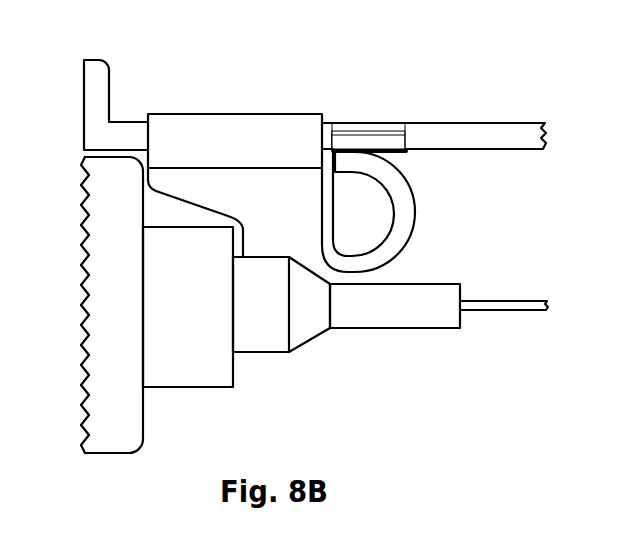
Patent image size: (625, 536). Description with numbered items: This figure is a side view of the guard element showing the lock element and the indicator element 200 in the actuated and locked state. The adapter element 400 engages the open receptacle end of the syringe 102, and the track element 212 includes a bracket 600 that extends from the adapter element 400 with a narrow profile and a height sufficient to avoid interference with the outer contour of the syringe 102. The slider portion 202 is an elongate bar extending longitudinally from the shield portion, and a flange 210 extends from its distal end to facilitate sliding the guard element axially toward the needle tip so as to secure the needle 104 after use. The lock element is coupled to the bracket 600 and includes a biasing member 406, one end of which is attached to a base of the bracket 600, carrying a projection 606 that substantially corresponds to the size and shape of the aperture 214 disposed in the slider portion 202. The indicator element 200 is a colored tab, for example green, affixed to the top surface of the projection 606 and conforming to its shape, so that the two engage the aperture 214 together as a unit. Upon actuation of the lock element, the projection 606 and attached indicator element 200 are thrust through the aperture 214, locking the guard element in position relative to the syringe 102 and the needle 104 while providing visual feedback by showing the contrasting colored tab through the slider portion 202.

The syringe 102 is at (98, 303).
The needle 104 is at (518, 306).
The indicator element 200 is at (366, 131).
The slider portion 202 is at (478, 132).
The flange 210 is at (96, 68).
The track element 212 is at (282, 76).
The aperture 214 is at (392, 127).
The adapter element 400 is at (313, 330).
The biasing member 406 is at (405, 218).
The bracket 600 is at (293, 208).
The projection 606 is at (404, 153).